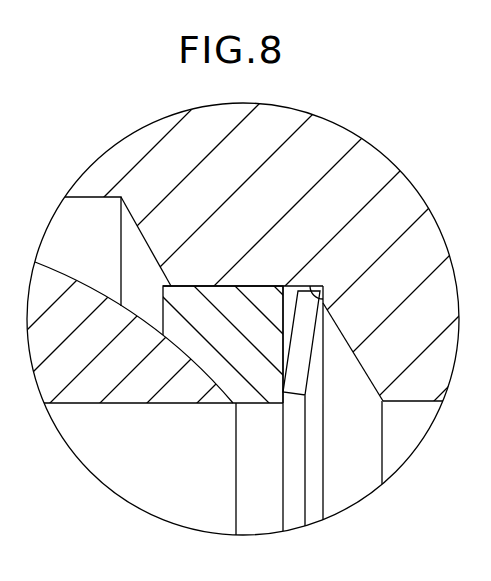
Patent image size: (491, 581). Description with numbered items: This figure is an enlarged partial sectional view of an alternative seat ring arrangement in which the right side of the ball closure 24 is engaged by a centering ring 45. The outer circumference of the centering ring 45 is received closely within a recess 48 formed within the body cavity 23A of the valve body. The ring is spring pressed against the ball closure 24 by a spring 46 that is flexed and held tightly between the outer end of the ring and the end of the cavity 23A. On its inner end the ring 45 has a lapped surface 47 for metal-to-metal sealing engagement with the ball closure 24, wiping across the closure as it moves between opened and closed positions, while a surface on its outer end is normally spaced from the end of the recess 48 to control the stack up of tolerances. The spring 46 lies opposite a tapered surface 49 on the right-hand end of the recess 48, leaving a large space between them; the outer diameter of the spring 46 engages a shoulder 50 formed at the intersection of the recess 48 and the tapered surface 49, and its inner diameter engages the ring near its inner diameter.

The cavity 23A is at (137, 231).
The ball closure 24 is at (121, 283).
The centering ring 45 is at (215, 286).
The spring 46 is at (316, 370).
The lapped surface 47 is at (197, 362).
The recess 48 is at (190, 288).
The tapered surface 49 is at (367, 377).
The shoulder 50 is at (313, 286).